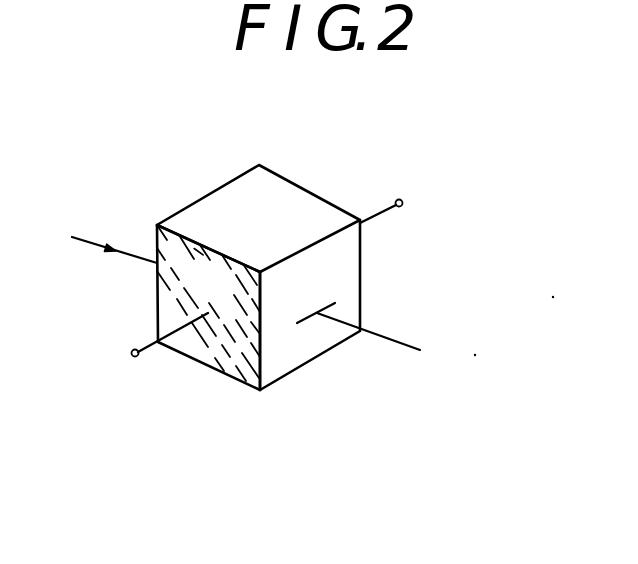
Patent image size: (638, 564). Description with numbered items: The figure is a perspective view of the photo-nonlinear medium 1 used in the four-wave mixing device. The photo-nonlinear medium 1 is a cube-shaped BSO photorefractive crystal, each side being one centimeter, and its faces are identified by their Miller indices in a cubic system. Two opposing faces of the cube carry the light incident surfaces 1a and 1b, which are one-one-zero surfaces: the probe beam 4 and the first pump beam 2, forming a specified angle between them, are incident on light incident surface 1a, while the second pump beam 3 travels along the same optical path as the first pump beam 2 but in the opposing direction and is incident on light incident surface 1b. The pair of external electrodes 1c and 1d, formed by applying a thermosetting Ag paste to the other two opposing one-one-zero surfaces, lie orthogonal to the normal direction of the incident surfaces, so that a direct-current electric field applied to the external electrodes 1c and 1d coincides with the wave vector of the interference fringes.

The photo-nonlinear medium 1 is at (373, 270).
The light incident surface 1a is at (302, 358).
The light incident surface 1b is at (193, 236).
The external electrode 1c is at (138, 357).
The external electrode 1d is at (403, 203).
The first pump beam 2 is at (386, 341).
The second pump beam 3 is at (90, 238).
The probe beam 4 is at (317, 313).